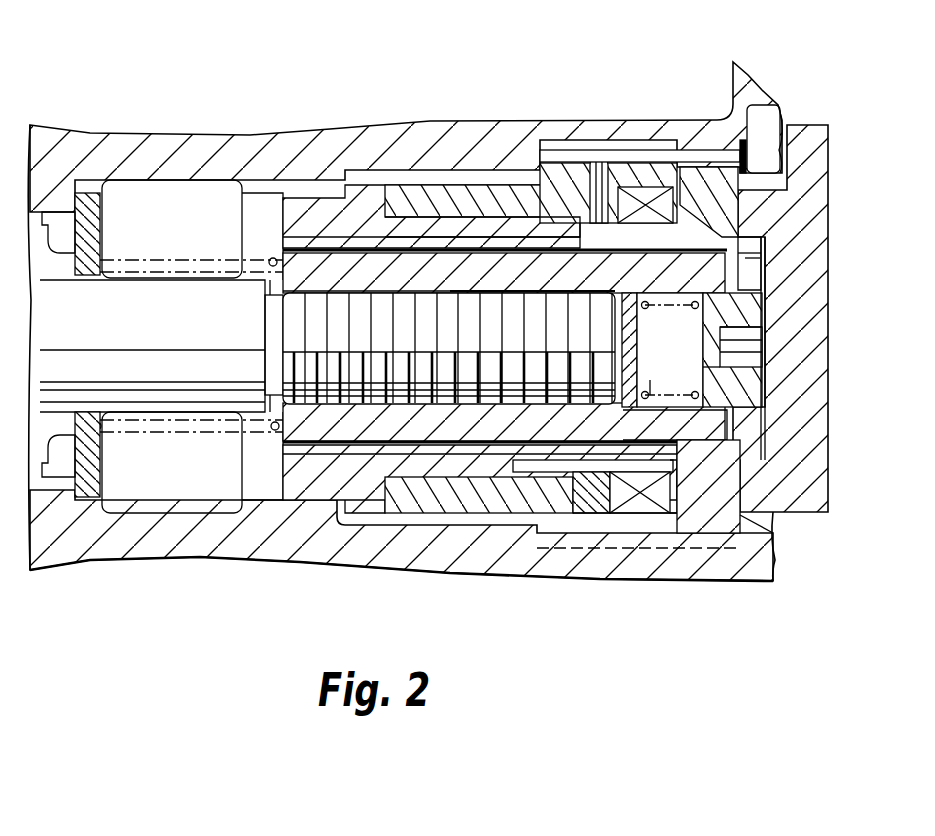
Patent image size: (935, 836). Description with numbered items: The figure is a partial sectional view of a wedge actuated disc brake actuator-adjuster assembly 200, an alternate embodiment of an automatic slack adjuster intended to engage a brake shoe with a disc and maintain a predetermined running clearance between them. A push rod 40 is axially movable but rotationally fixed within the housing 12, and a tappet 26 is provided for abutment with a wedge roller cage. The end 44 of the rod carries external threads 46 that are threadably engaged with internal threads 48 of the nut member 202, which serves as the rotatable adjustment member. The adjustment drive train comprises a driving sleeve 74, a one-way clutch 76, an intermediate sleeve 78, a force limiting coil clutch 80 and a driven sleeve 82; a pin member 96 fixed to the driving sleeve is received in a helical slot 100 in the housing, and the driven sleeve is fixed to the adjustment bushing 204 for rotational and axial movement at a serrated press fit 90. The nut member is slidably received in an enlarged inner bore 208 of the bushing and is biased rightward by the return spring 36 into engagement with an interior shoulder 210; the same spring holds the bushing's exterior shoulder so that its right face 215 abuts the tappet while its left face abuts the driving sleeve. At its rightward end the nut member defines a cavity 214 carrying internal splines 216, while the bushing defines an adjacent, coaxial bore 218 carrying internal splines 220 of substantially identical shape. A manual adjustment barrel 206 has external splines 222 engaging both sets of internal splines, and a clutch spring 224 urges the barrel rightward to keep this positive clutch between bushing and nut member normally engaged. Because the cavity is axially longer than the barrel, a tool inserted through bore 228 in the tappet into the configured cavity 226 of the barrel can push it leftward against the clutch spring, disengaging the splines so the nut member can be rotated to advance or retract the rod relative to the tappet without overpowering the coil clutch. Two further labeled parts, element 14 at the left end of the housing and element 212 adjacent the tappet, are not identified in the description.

The housing 12 is at (205, 545).
The seal 14 is at (98, 135).
The tappet 26 is at (830, 470).
The return spring 36 is at (148, 265).
The push rod 40 is at (161, 346).
The end of rod 44 is at (449, 348).
The external threads 46 is at (527, 282).
The internal threads 48 is at (427, 297).
The driving sleeve 74 is at (588, 518).
The one-way clutch 76 is at (638, 503).
The intermediate sleeve 78 is at (535, 472).
The force limiting coil clutch 80 is at (520, 205).
The driven sleeve 82 is at (407, 225).
The serrated press fit 90 is at (335, 225).
The pin member 96 is at (598, 170).
The helical slot 100 is at (640, 158).
The wedge type disc brake actuator-adjuster assembly 200 is at (182, 112).
The nut member 202 is at (505, 346).
The adjustment bushing 204 is at (733, 212).
The manual adjustment barrel 206 is at (750, 402).
The enlarged inner bore 208 is at (748, 242).
The interior shoulder 210 is at (745, 268).
The lower shoulder 212 is at (745, 515).
The cavity 214 is at (662, 350).
The right face 215 is at (673, 490).
The internal splines 216 is at (648, 605).
The bore 218 is at (765, 303).
The internal splines 220 is at (740, 380).
The external splines 222 is at (750, 258).
The clutch spring 224 is at (650, 393).
The configured cavity 226 is at (755, 355).
The bore 228 is at (718, 412).